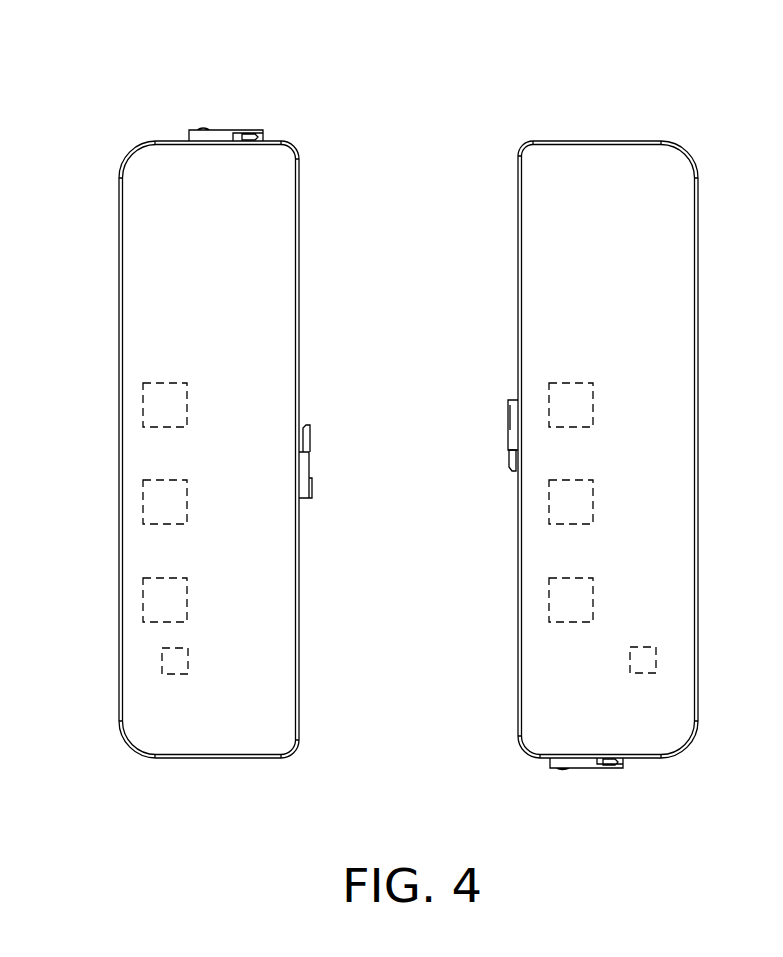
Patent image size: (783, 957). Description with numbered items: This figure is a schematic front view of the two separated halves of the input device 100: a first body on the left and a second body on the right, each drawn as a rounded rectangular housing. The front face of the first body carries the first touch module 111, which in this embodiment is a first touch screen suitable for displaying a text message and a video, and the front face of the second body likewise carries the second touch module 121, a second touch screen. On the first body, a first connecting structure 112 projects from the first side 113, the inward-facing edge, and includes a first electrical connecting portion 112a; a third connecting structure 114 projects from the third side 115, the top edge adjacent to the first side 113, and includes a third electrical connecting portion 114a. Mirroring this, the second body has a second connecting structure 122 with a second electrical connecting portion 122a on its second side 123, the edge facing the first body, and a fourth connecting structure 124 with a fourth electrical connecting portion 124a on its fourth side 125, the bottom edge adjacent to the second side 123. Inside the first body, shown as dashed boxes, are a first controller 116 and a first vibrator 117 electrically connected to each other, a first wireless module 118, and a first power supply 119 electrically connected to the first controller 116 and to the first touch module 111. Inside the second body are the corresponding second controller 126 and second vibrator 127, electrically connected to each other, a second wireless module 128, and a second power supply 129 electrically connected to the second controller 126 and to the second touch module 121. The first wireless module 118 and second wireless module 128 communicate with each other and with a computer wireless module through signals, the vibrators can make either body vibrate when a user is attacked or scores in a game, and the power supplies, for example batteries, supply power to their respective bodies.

The input device 100 is at (412, 446).
The first touch module 111 is at (278, 165).
The first connecting structure 112 is at (351, 459).
The first electrical connecting portion 112a is at (310, 440).
The first side 113 is at (225, 387).
The third connecting structure 114 is at (197, 92).
The third electrical connecting portion 114a is at (248, 130).
The third side 115 is at (197, 79).
The first controller 116 is at (143, 405).
The first vibrator 117 is at (143, 502).
The first wireless module 118 is at (143, 600).
The first power supply 119 is at (174, 675).
The second touch module 121 is at (562, 163).
The second connecting structure 122 is at (467, 436).
The second electrical connecting portion 122a is at (508, 428).
The second side 123 is at (596, 474).
The fourth connecting structure 124 is at (583, 818).
The fourth electrical connecting portion 124a is at (610, 768).
The fourth side 125 is at (618, 818).
The second controller 126 is at (593, 403).
The second vibrator 127 is at (593, 501).
The second wireless module 128 is at (593, 598).
The second power supply 129 is at (650, 674).